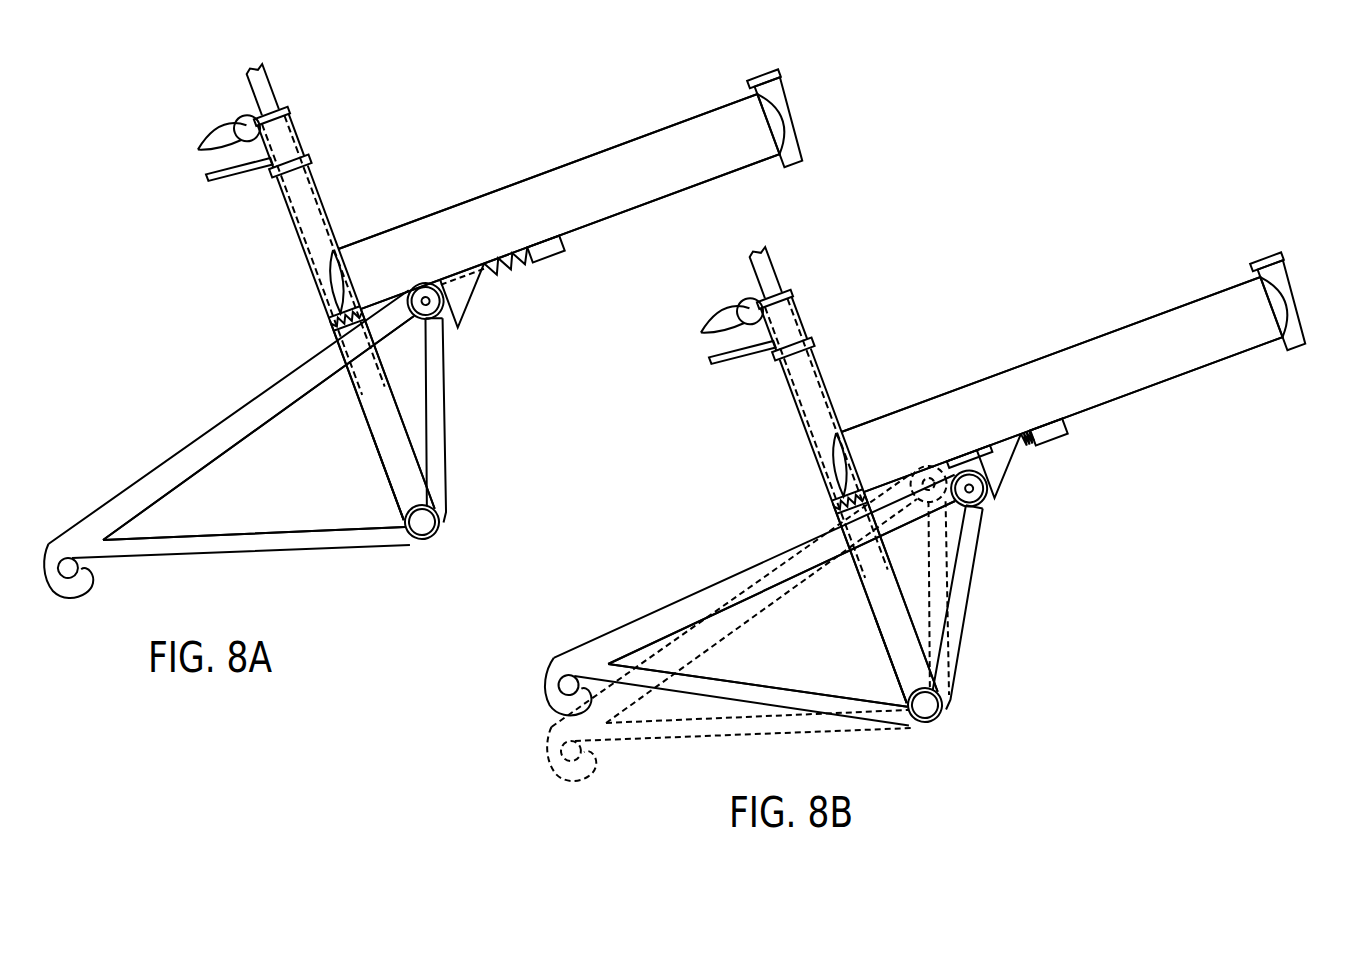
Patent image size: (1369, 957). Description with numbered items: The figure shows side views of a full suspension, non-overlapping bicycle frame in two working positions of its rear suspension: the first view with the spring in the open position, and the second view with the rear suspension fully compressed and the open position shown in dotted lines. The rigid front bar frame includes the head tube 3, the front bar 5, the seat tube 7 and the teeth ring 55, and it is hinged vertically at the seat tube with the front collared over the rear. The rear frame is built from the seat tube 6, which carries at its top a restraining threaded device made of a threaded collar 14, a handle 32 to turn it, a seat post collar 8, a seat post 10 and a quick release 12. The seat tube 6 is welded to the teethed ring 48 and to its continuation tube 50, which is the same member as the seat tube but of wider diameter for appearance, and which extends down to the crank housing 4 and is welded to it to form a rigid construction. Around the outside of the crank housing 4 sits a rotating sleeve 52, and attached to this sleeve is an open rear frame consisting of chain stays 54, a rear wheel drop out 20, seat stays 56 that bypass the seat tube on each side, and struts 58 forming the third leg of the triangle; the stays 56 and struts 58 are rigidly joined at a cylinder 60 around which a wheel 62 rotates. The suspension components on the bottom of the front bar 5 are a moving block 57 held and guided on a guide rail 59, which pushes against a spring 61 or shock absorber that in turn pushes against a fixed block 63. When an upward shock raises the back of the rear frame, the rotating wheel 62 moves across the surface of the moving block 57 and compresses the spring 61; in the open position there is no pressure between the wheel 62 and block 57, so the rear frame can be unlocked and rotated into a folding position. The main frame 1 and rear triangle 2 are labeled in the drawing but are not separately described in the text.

In FIG. 8A, the main frame beam 1 is at (488, 179).
In FIG. 8B, the main frame beam 1 is at (990, 364).
In FIG. 8A, the rear frame triangle 2 is at (272, 484).
In FIG. 8B, the rear frame triangle 2 is at (775, 669).
In FIG. 8A, the head tube 3 is at (795, 93).
In FIG. 8B, the head tube 3 is at (1298, 276).
In FIG. 8A, the crank housing 4 is at (436, 523).
In FIG. 8B, the crank housing 4 is at (939, 707).
In FIG. 8A, the front bar 5 is at (559, 201).
In FIG. 8B, the front bar 5 is at (1062, 384).
In FIG. 8A, the seat tube 6 is at (323, 189).
In FIG. 8B, the seat tube 6 is at (826, 372).
In FIG. 8A, the seat tube 7 is at (293, 246).
In FIG. 8B, the seat tube 7 is at (792, 405).
In FIG. 8A, the seat post collar 8 is at (300, 111).
In FIG. 8B, the seat post collar 8 is at (803, 294).
In FIG. 8A, the seat post 10 is at (270, 82).
In FIG. 8B, the seat post 10 is at (773, 265).
In FIG. 8A, the quick release 12 is at (240, 108).
In FIG. 8B, the quick release 12 is at (743, 291).
In FIG. 8A, the threaded collar 14 is at (303, 136).
In FIG. 8B, the threaded collar 14 is at (808, 319).
In FIG. 8A, the rear wheel drop out 20 is at (84, 570).
In FIG. 8B, the rear wheel drop out 20 is at (560, 686).
In FIG. 8A, the handle 32 is at (200, 177).
In FIG. 8B, the handle 32 is at (720, 372).
In FIG. 8A, the teethed ring 48 is at (341, 325).
In FIG. 8B, the teethed ring 48 is at (845, 498).
In FIG. 8A, the continuation tube 50 is at (396, 467).
In FIG. 8B, the continuation tube 50 is at (896, 640).
In FIG. 8A, the rotating sleeve 52 is at (405, 497).
In FIG. 8B, the rotating sleeve 52 is at (908, 677).
In FIG. 8A, the chain stays 54 is at (195, 547).
In FIG. 8B, the chain stays 54 is at (741, 705).
In FIG. 8A, the teeth ring 55 is at (328, 306).
In FIG. 8B, the teeth ring 55 is at (832, 489).
In FIG. 8A, the seat stays 56 is at (196, 469).
In FIG. 8B, the seat stays 56 is at (732, 601).
In FIG. 8A, the moving block 57 is at (480, 287).
In FIG. 8B, the moving block 57 is at (1010, 465).
In FIG. 8A, the struts 58 is at (440, 386).
In FIG. 8B, the struts 58 is at (965, 578).
In FIG. 8A, the guide rail 59 is at (417, 282).
In FIG. 8B, the guide rail 59 is at (960, 443).
In FIG. 8A, the cylinder 60 is at (425, 323).
In FIG. 8B, the cylinder 60 is at (965, 507).
In FIG. 8A, the spring 61 is at (514, 284).
In FIG. 8B, the spring 61 is at (1037, 455).
In FIG. 8A, the rotating wheel 62 is at (446, 321).
In FIG. 8B, the rotating wheel 62 is at (990, 508).
In FIG. 8A, the fixed block 63 is at (566, 249).
In FIG. 8B, the fixed block 63 is at (1072, 433).